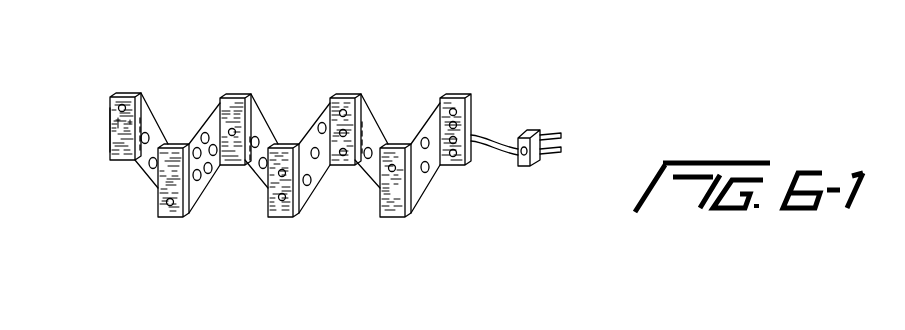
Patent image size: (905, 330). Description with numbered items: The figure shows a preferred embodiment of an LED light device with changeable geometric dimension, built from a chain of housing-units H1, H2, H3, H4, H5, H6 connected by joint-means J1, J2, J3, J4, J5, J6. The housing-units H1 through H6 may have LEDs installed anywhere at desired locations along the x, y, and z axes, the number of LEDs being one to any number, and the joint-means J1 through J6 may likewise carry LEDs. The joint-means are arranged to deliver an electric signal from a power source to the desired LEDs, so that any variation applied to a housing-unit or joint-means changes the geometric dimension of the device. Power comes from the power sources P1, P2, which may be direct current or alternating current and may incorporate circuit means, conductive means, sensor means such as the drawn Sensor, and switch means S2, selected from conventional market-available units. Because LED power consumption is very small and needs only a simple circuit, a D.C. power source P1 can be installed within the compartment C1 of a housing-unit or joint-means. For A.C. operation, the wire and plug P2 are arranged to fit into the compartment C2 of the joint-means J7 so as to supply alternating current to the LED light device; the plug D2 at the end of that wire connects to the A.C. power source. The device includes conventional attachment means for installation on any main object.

The joint-means J1 is at (129, 93).
The joint-means J2 is at (173, 217).
The joint-means J3 is at (233, 93).
The joint-means J4 is at (277, 217).
The joint-means J5 is at (347, 93).
The joint-means J6 is at (385, 217).
The joint-means J7 is at (458, 93).
The housing-unit H1 is at (150, 120).
The housing-unit H2 is at (196, 204).
The housing-unit H3 is at (258, 186).
The housing-unit H4 is at (320, 186).
The housing-unit H5 is at (373, 186).
The housing-unit H6 is at (427, 188).
The compartment C1 is at (110, 115).
The compartment C2 is at (471, 113).
The plug D2 is at (563, 136).
The power source P1 is at (112, 147).
The wire and plug P2 is at (533, 166).
The sensor Sensor is at (170, 202).
The switch means S2 is at (232, 132).